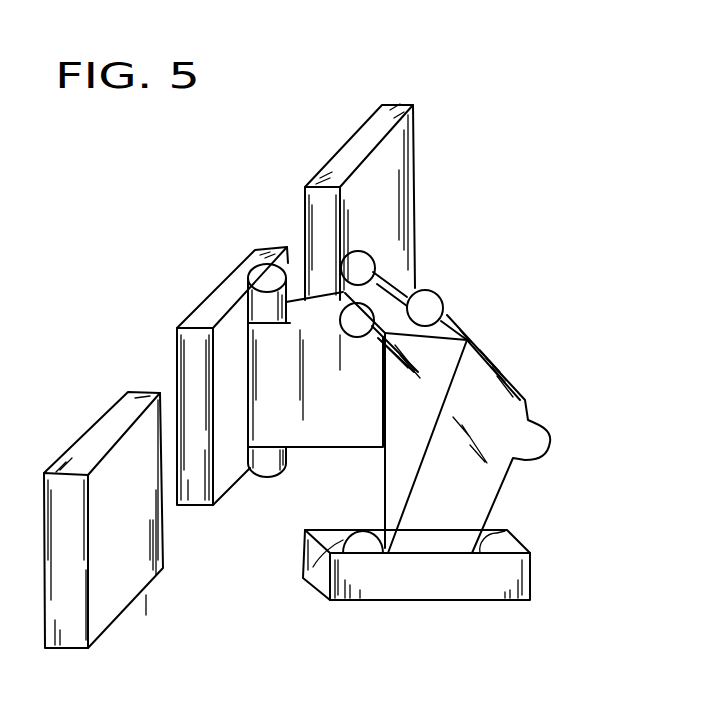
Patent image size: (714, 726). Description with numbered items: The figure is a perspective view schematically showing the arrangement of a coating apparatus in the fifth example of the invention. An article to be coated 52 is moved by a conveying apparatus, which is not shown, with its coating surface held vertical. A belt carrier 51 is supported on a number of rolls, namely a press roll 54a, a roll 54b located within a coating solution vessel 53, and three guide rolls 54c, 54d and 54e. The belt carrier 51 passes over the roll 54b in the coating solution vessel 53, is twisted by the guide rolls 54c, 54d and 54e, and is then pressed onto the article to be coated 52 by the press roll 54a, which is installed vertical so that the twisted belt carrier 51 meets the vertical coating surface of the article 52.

The belt carrier 51 is at (490, 488).
The article to be coated 52 is at (92, 438).
The coating solution vessel 53 is at (525, 580).
The press roll 54a is at (267, 276).
The roll 54b is at (320, 565).
The guide roll 54c is at (358, 267).
The guide roll 54d is at (363, 315).
The guide roll 54e is at (431, 306).